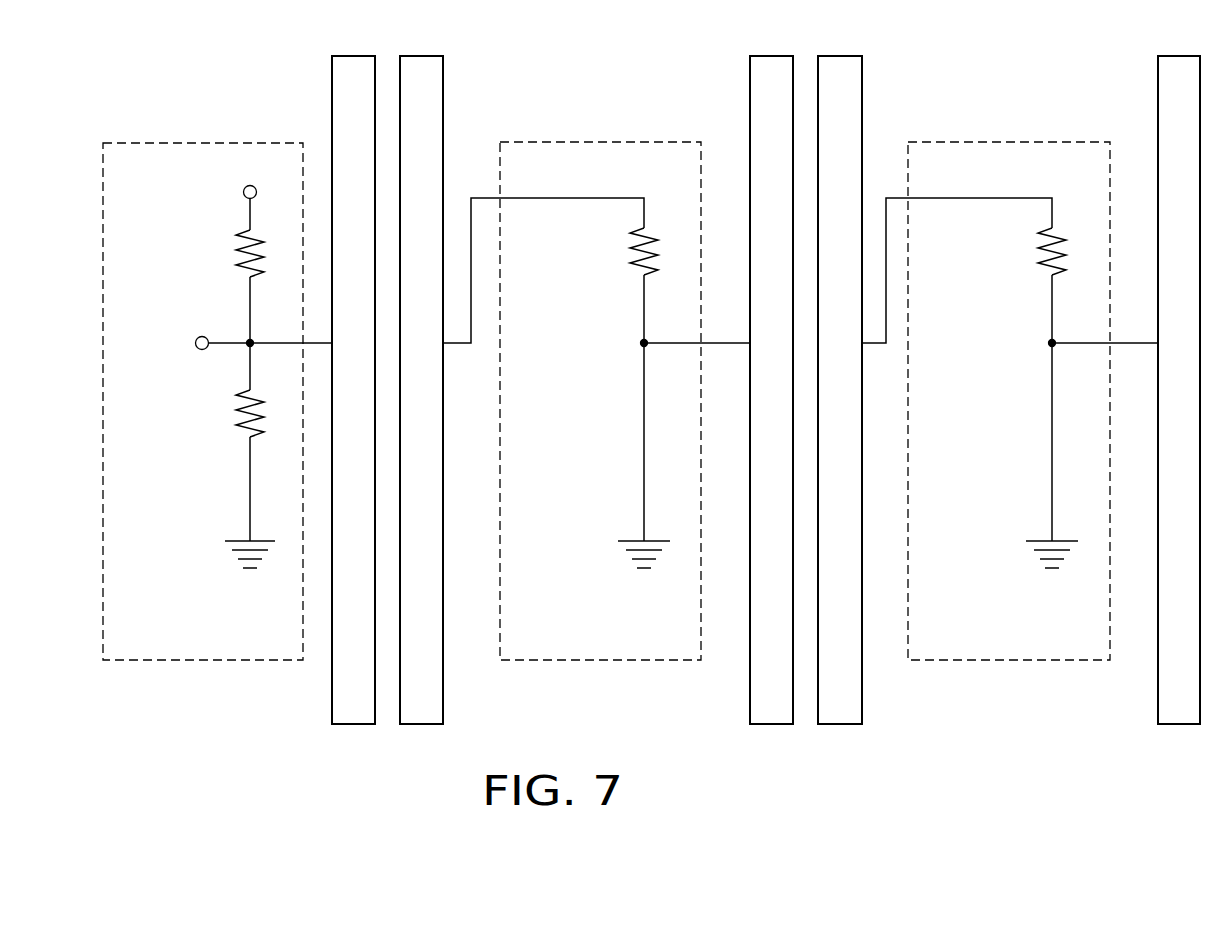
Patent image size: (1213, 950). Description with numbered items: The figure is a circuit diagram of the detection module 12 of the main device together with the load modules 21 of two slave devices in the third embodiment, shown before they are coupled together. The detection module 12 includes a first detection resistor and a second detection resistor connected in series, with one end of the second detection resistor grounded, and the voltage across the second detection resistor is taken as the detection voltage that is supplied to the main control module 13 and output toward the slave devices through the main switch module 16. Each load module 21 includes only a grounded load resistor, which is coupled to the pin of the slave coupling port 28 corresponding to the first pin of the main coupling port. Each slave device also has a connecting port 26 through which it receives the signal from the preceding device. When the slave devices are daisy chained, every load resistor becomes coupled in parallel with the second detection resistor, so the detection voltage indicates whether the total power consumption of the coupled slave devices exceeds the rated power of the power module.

The detection module 12 is at (217, 376).
The main control module 13 is at (200, 333).
The main switch module 16 is at (352, 56).
The load module 21 is at (588, 142).
The connecting port 26 is at (424, 56).
The slave coupling port 28 is at (768, 56).